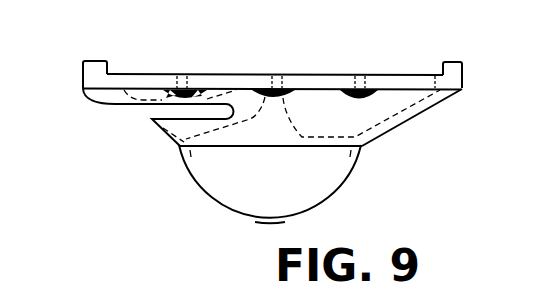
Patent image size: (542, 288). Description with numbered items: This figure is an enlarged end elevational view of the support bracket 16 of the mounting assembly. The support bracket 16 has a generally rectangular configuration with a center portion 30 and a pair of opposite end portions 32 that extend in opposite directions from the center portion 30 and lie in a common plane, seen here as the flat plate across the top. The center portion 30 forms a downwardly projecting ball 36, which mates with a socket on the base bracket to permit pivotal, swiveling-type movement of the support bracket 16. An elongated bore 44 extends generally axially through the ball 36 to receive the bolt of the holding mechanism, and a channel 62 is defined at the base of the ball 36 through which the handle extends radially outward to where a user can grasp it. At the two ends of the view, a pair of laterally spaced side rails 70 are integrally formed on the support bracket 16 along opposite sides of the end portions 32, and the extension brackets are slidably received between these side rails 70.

The side rails 70 is at (108, 72).
The elongated bore 44 is at (278, 73).
The opposite end portions 32 is at (388, 82).
The support bracket 16 is at (437, 108).
The channel 62 is at (153, 120).
The center portion 30 is at (338, 197).
The ball 36 is at (262, 225).